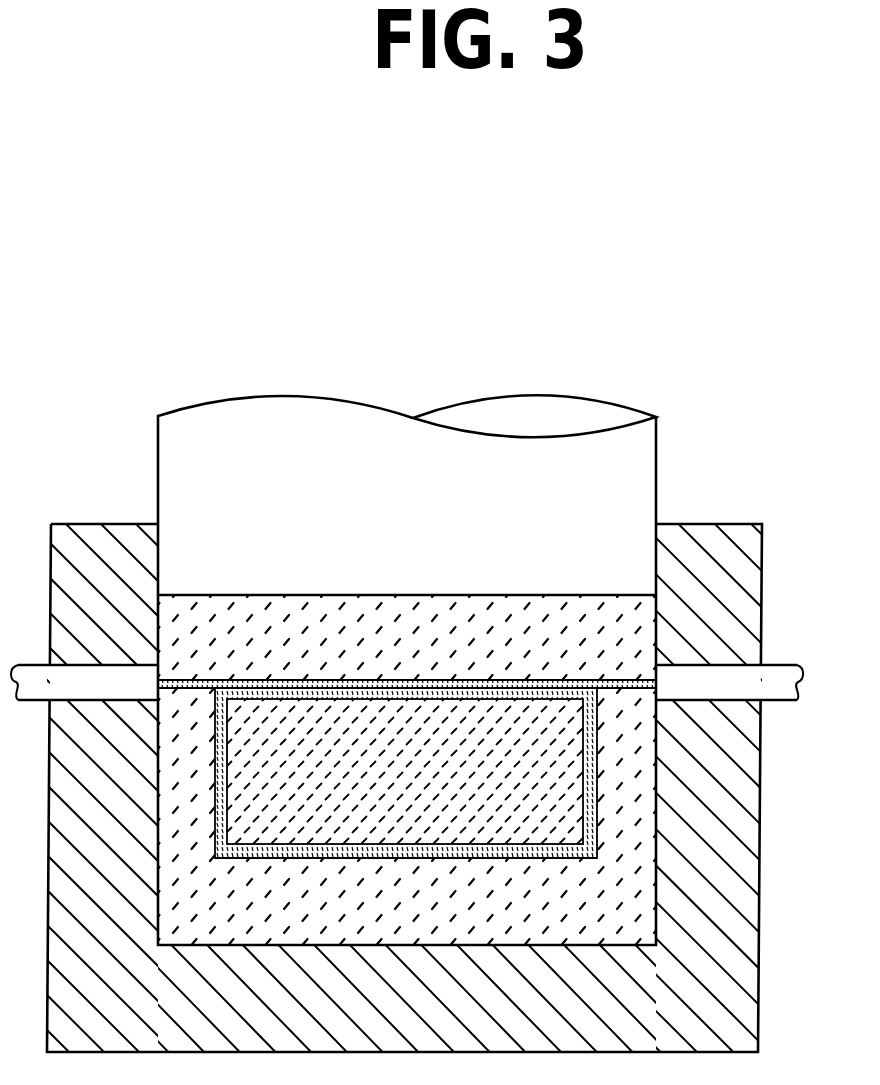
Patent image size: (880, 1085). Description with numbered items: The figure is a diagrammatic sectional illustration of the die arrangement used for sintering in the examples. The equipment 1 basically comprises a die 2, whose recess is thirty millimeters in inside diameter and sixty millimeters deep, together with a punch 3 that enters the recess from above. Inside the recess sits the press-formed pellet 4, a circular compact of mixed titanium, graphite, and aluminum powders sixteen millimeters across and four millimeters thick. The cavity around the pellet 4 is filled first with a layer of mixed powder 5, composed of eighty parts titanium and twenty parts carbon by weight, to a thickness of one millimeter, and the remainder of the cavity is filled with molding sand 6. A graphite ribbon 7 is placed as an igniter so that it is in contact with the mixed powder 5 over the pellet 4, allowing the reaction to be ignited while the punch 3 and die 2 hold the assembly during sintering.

The equipment 1 is at (540, 390).
The die 2 is at (716, 545).
The punch 3 is at (188, 422).
The pellet 4 is at (416, 799).
The mixed powder 5 is at (590, 738).
The molding sand 6 is at (607, 903).
The graphite ribbon 7 is at (552, 678).